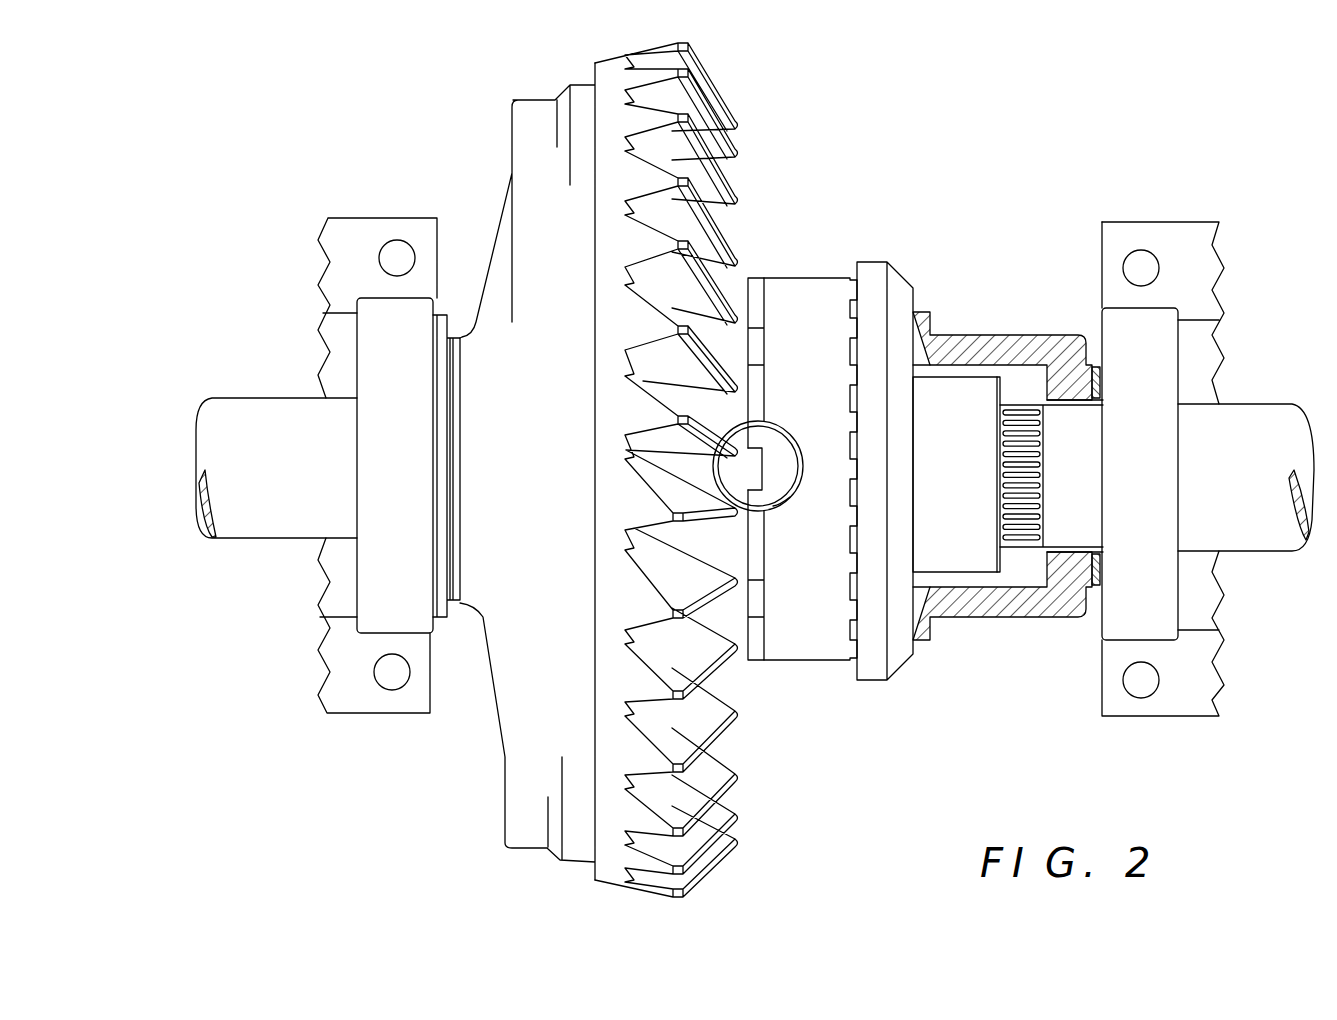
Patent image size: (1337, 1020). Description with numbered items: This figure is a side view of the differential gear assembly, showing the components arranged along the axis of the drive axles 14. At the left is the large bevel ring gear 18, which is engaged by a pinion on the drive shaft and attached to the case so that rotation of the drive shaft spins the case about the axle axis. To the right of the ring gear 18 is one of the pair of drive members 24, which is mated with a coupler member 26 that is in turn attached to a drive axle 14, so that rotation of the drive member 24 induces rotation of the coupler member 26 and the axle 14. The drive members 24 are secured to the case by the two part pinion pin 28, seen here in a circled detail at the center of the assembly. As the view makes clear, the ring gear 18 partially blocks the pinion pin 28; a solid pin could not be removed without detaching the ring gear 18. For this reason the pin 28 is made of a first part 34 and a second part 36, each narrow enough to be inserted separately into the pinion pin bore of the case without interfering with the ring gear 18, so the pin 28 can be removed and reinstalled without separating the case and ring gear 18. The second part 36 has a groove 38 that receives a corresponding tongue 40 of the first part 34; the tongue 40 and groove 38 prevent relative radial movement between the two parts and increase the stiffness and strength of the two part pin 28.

The drive axle 14 is at (1058, 528).
The ring gear 18 is at (637, 860).
The drive member 24 is at (800, 300).
The coupler member 26 is at (897, 287).
The two part pinion pin 28 is at (786, 515).
The first part 34 is at (735, 443).
The second part 36 is at (780, 452).
The groove 38 is at (745, 470).
The tongue 40 is at (800, 463).